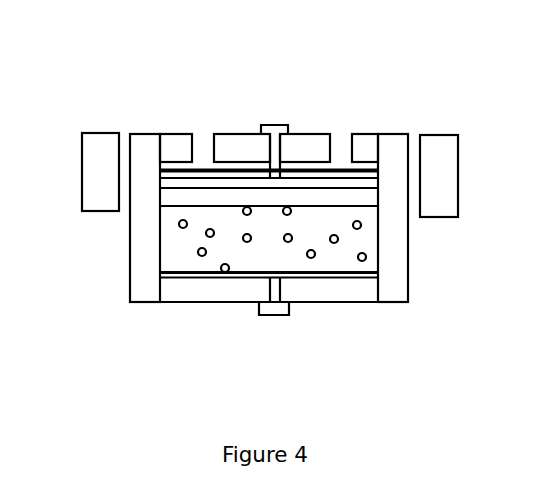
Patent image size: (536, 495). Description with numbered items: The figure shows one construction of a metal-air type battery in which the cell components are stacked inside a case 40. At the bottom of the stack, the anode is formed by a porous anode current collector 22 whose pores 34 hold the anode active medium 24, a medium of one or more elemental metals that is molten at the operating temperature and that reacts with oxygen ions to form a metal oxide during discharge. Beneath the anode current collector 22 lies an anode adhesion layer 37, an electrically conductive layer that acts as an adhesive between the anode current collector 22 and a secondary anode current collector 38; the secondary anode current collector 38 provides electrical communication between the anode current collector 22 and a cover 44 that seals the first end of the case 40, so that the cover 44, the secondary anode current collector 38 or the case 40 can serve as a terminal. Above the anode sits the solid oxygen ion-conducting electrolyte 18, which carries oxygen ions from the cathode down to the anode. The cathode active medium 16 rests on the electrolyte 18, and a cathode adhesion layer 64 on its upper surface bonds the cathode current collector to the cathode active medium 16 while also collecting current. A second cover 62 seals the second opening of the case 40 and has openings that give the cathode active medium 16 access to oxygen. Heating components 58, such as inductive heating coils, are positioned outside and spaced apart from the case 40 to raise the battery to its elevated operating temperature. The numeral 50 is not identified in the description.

The cathode active medium 16 is at (163, 172).
The oxygen ion-conducting electrolyte 18 is at (368, 195).
The anode current collector 22 is at (370, 230).
The anode active medium 24 is at (182, 225).
The pores 34 is at (200, 251).
The anode adhesion layer 37 is at (192, 275).
The secondary anode current collector 38 is at (267, 315).
The case 40 is at (393, 143).
The cover 44 is at (360, 293).
The left side wall 50 is at (142, 150).
The heating component 58 is at (93, 172).
The second cover 62 is at (167, 148).
The cathode adhesion layer 64 is at (206, 176).